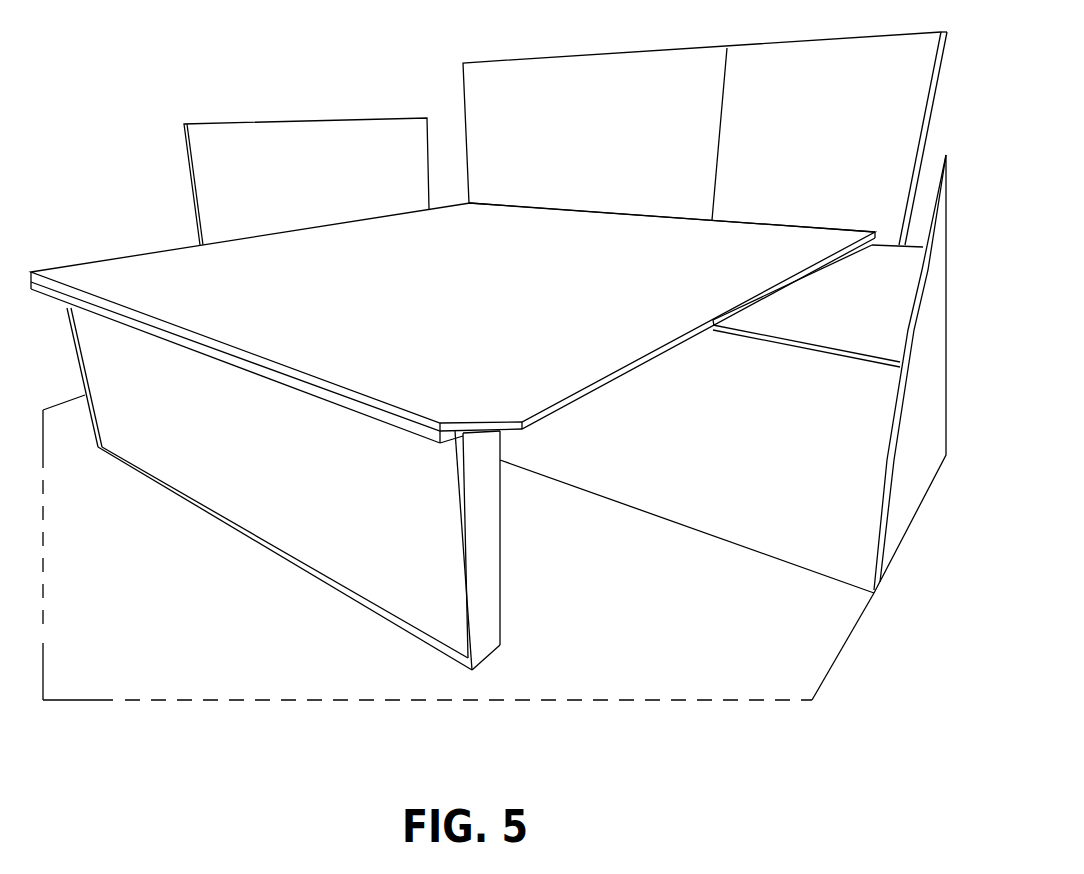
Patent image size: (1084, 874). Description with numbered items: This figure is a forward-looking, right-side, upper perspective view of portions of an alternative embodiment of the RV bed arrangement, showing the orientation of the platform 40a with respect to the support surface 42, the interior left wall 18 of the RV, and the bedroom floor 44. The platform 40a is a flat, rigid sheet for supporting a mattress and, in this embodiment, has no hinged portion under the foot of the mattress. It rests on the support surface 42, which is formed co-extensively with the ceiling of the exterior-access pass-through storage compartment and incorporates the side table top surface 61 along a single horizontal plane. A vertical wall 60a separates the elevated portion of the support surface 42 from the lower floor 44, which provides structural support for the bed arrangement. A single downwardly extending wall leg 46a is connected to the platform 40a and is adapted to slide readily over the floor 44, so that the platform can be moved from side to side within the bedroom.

The interior left wall 18 is at (321, 199).
The platform 40a is at (462, 283).
The support surface 42 is at (763, 317).
The floor 44 is at (654, 602).
The wall leg 46a is at (276, 470).
The vertical wall 60a is at (808, 449).
The top surface of side table 61 is at (868, 325).